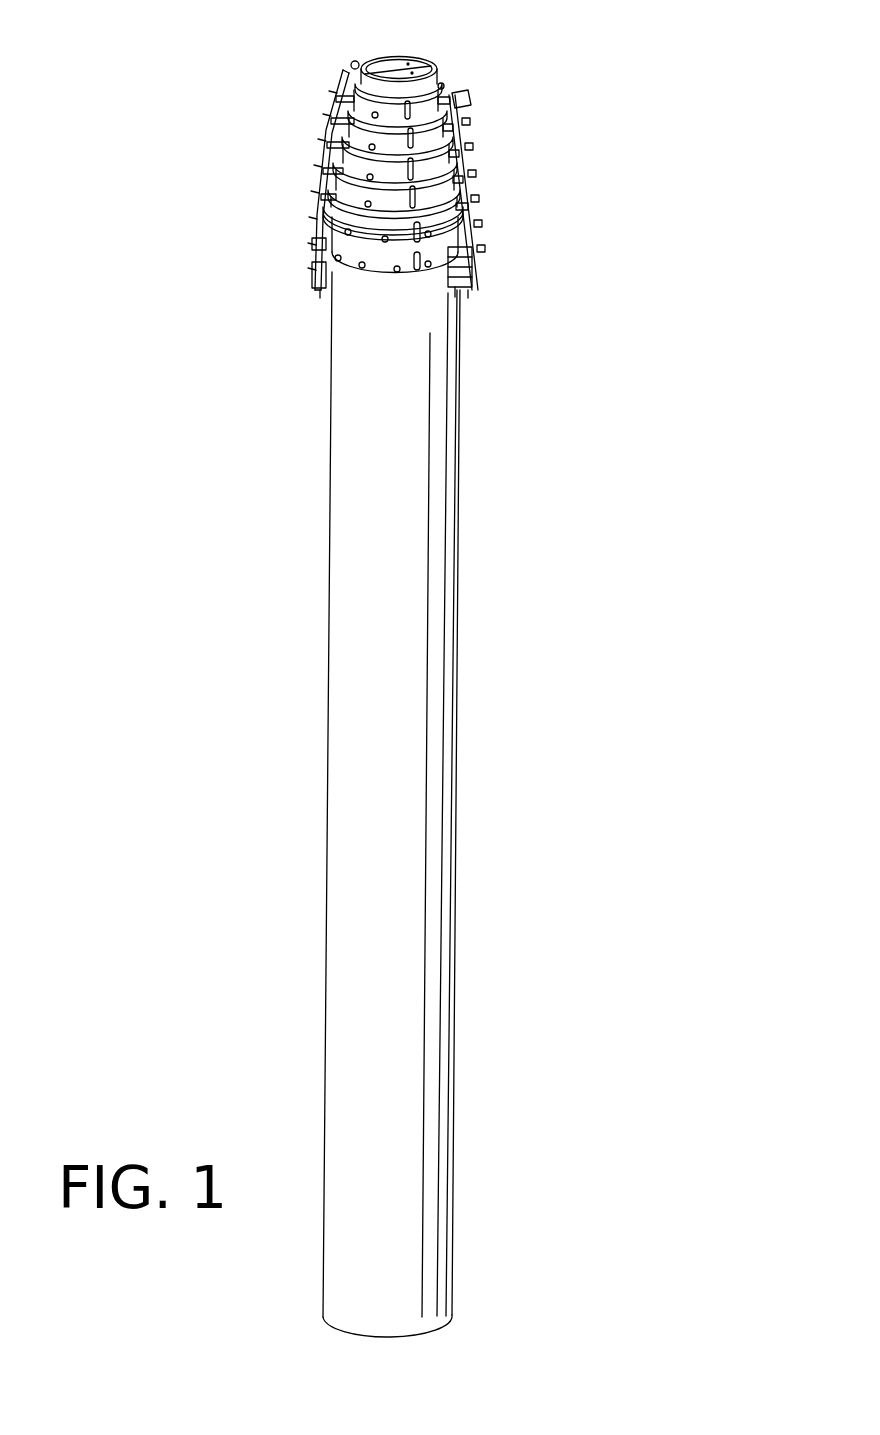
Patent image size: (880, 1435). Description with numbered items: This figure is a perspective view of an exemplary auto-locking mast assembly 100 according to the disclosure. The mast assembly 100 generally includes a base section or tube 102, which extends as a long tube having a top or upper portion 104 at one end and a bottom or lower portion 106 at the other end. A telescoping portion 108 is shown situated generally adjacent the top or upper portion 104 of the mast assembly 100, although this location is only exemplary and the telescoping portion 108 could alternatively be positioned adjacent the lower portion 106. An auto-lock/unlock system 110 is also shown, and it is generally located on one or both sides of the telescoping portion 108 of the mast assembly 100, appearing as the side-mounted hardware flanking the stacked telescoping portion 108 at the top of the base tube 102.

The auto-locking mast assembly 100 is at (558, 763).
The base section or tube 102 is at (329, 626).
The top or upper portion 104 is at (292, 144).
The bottom or lower portion 106 is at (312, 1289).
The telescoping portion 108 is at (318, 238).
The auto-lock/unlock system 110 is at (331, 66).